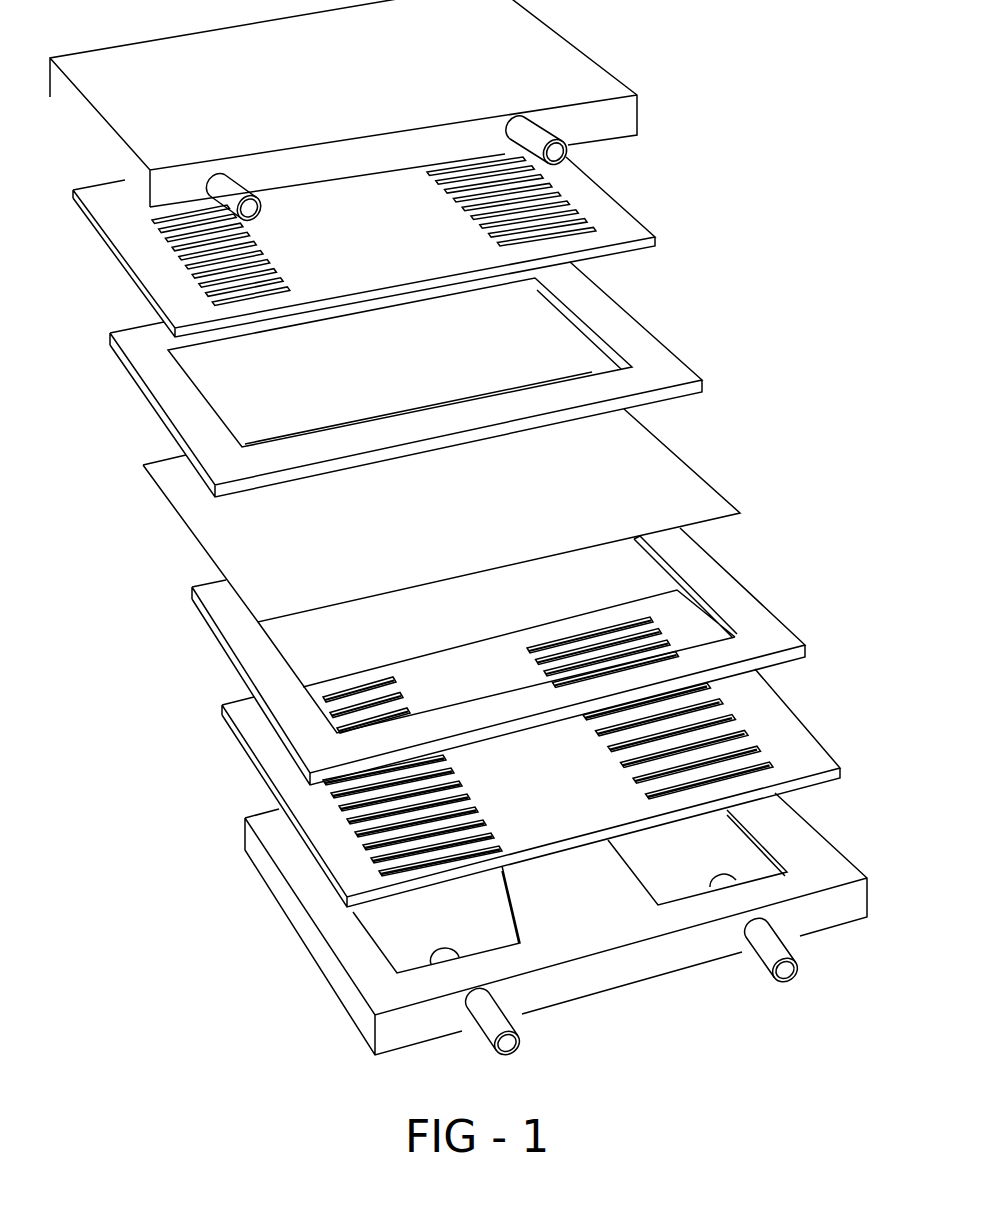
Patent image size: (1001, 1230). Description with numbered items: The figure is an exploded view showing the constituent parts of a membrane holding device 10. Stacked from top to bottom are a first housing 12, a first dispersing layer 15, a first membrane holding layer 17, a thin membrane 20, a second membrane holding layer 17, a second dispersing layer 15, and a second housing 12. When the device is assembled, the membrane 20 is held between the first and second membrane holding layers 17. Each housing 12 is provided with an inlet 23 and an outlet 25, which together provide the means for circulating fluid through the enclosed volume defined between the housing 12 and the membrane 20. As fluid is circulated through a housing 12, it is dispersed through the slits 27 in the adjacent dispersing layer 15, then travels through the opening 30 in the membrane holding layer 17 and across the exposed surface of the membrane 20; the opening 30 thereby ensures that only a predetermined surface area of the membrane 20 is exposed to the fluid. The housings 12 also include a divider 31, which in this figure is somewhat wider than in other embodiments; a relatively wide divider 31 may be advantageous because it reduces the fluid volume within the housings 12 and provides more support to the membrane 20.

The membrane holding device 10 is at (108, 703).
The housing 12 is at (612, 73).
The dispersing layer 15 is at (657, 230).
The membrane holding layer 17 is at (672, 347).
The membrane 20 is at (193, 541).
The inlet 23 is at (238, 222).
The outlet 25 is at (562, 152).
The slits 27 is at (245, 251).
The opening 30 is at (243, 397).
The divider 31 is at (590, 907).